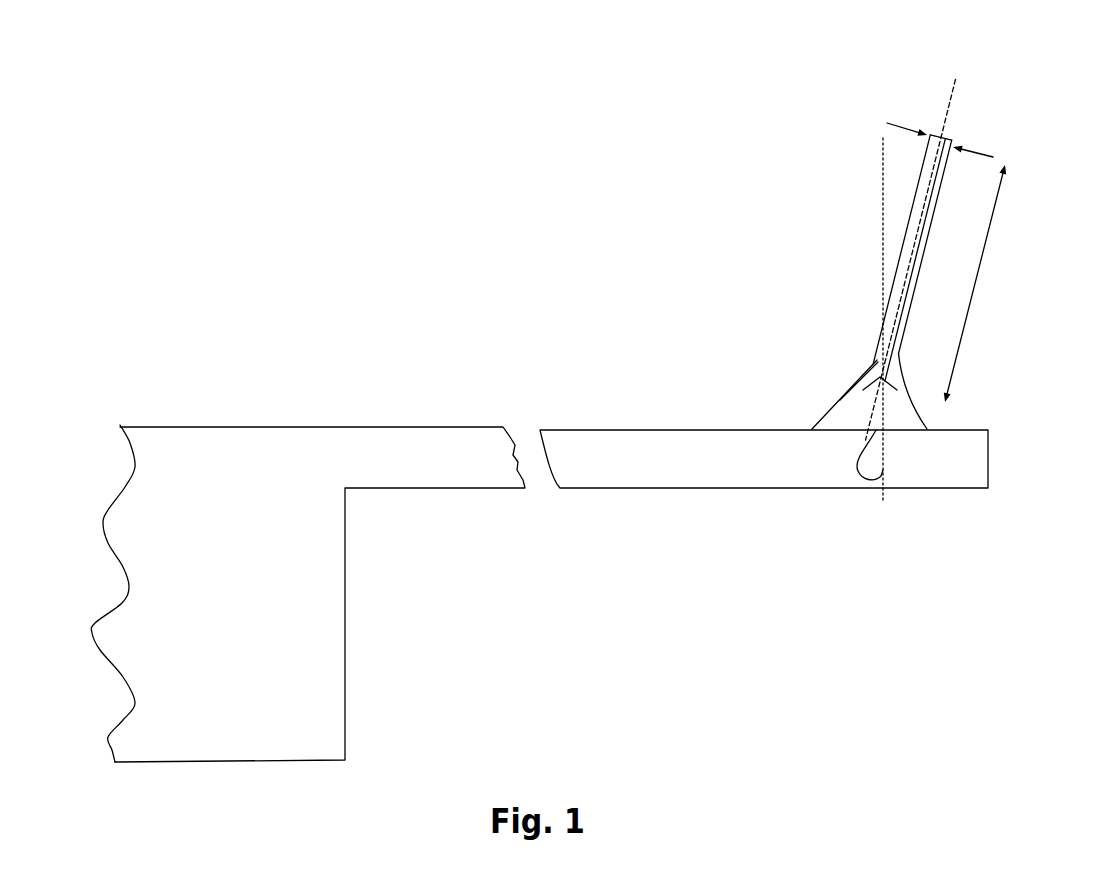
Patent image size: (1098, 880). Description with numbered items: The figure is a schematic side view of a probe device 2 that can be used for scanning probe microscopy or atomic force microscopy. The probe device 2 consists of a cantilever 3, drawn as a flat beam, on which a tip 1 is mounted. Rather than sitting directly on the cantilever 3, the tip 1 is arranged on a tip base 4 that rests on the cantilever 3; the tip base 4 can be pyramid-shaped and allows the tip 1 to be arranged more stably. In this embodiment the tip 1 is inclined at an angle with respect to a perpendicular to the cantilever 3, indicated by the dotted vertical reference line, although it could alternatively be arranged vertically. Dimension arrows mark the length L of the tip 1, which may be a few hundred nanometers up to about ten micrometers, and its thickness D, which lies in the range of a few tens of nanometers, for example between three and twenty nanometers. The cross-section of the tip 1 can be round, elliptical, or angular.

The tip 1 is at (913, 203).
The probe device 2 is at (440, 269).
The cantilever 3 is at (738, 465).
The tip base 4 is at (848, 408).
The thickness D is at (975, 143).
The length L is at (975, 288).